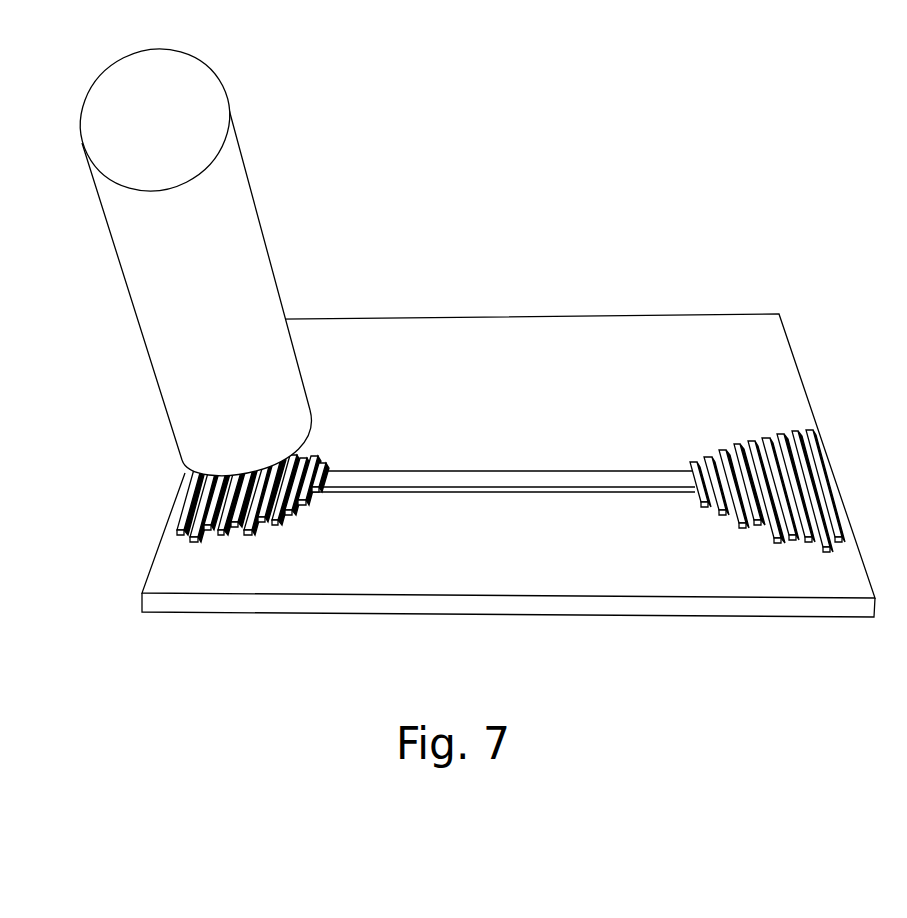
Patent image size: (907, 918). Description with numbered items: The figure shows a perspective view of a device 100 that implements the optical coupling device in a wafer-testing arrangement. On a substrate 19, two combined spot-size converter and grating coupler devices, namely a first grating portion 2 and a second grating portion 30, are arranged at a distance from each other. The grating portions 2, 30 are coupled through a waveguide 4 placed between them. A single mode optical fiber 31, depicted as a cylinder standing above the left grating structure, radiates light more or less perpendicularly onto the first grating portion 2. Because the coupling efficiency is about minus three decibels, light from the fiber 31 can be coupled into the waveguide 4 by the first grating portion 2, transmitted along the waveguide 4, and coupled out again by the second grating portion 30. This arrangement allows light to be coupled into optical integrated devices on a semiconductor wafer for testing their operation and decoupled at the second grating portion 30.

The device 100 is at (517, 30).
The first grating portion 2 is at (499, 490).
The waveguide 4 is at (477, 472).
The substrate 19 is at (773, 372).
The second grating portion 30 is at (702, 434).
The single mode optical fiber 31 is at (242, 193).